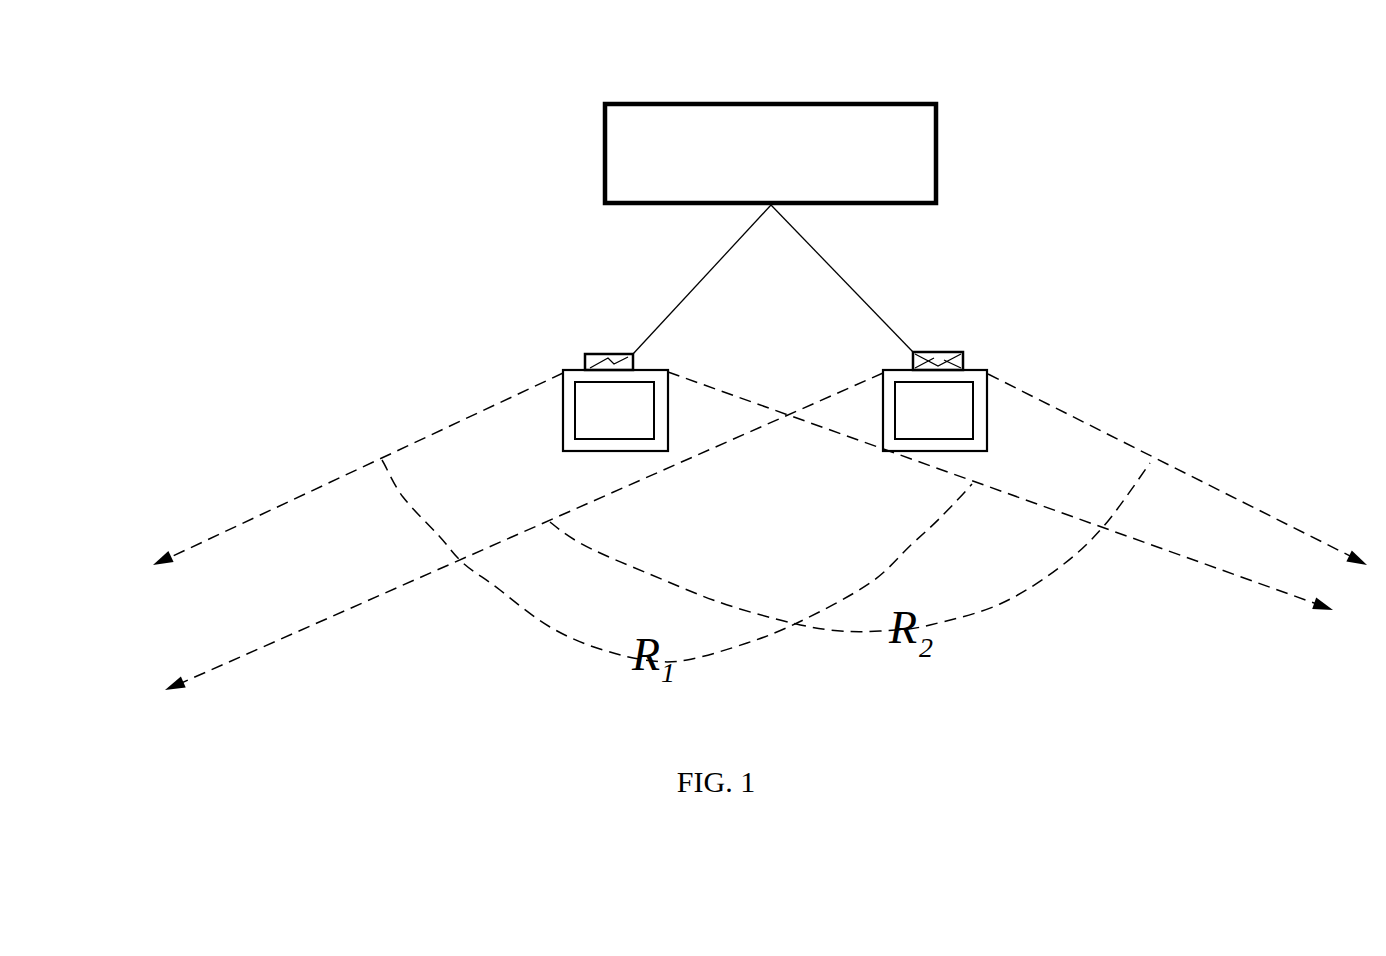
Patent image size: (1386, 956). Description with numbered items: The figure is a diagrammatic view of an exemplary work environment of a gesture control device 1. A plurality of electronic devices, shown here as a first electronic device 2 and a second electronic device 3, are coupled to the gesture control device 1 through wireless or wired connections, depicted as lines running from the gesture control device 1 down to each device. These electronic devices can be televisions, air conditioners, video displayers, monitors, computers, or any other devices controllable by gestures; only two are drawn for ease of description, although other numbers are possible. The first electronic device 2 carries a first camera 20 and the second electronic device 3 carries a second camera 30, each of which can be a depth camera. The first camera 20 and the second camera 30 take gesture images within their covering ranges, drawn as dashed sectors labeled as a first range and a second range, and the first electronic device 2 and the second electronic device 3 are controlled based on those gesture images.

The gesture control device 1 is at (847, 104).
The first electronic device 2 is at (563, 408).
The first camera 20 is at (605, 354).
The second electronic device 3 is at (987, 410).
The second camera 30 is at (963, 352).